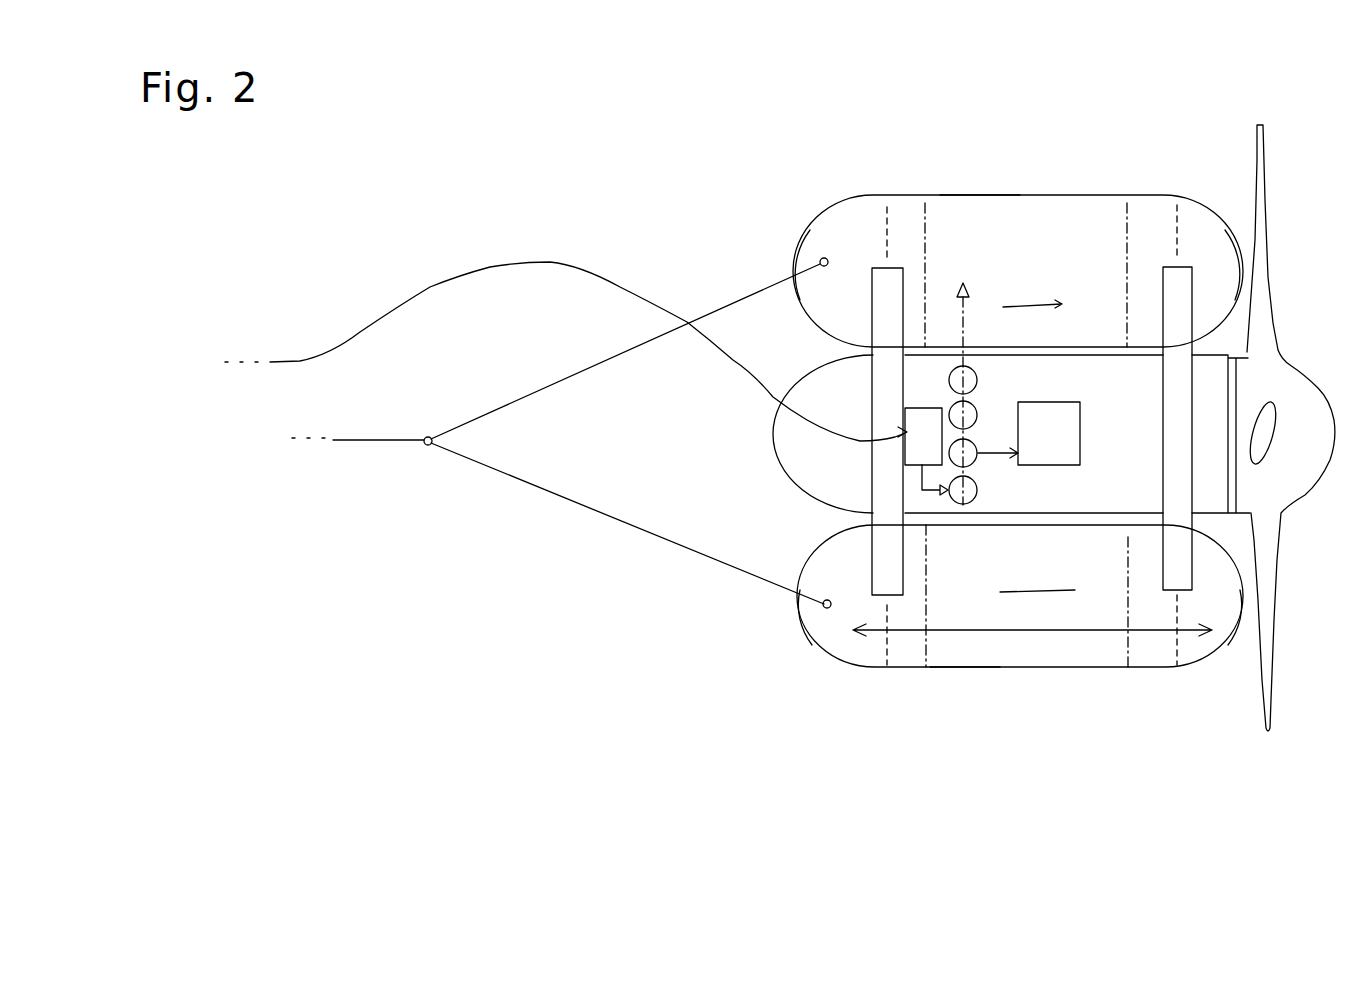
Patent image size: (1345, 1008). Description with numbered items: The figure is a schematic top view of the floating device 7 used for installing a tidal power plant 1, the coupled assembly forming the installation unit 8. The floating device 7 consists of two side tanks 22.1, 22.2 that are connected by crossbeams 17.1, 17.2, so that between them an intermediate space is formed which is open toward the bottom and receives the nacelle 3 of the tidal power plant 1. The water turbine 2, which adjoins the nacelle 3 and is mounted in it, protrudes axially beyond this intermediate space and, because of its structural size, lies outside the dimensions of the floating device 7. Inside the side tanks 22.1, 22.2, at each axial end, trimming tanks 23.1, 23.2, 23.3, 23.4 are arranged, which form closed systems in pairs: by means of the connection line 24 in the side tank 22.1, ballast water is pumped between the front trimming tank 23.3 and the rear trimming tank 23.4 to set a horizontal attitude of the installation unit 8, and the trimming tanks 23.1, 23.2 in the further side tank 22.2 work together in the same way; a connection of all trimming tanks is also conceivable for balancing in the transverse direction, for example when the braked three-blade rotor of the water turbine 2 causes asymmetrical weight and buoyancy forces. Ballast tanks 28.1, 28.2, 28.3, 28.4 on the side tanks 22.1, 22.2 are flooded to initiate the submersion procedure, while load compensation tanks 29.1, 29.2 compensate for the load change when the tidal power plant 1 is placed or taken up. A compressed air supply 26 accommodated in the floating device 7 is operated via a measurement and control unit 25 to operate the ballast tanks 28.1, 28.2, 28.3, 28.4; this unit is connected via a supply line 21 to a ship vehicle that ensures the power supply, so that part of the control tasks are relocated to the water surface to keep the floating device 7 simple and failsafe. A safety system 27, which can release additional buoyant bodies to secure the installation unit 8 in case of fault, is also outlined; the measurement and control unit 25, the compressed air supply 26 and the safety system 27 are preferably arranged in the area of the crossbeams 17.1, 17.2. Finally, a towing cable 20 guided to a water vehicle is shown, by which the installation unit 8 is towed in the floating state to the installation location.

The tidal power plant 1 is at (1291, 428).
The water turbine 2 is at (1282, 385).
The nacelle 3 is at (1142, 404).
The floating device 7 is at (1088, 246).
The installation unit 8 is at (1055, 733).
The crossbeam 17.1 is at (887, 468).
The crossbeam 17.2 is at (1176, 280).
The towing cable 20 is at (370, 442).
The supply line 21 is at (485, 252).
The side tank 22.1 is at (960, 667).
The side tank 22.2 is at (977, 197).
The trimming tank 23.1 is at (848, 240).
The trimming tank 23.2 is at (1190, 237).
The front trimming tank 23.3 is at (835, 643).
The rear trimming tank 23.4 is at (1193, 645).
The connection line 24 is at (1023, 630).
The measurement and control unit 25 is at (905, 430).
The compressed air supply 26 is at (975, 402).
The safety system 27 is at (1065, 451).
The ballast tank 28.1 is at (905, 242).
The ballast tank 28.2 is at (1152, 242).
The ballast tank 28.3 is at (905, 652).
The ballast tank 28.4 is at (1152, 650).
The load compensation tank 29.1 is at (1031, 292).
The load compensation tank 29.2 is at (1037, 581).